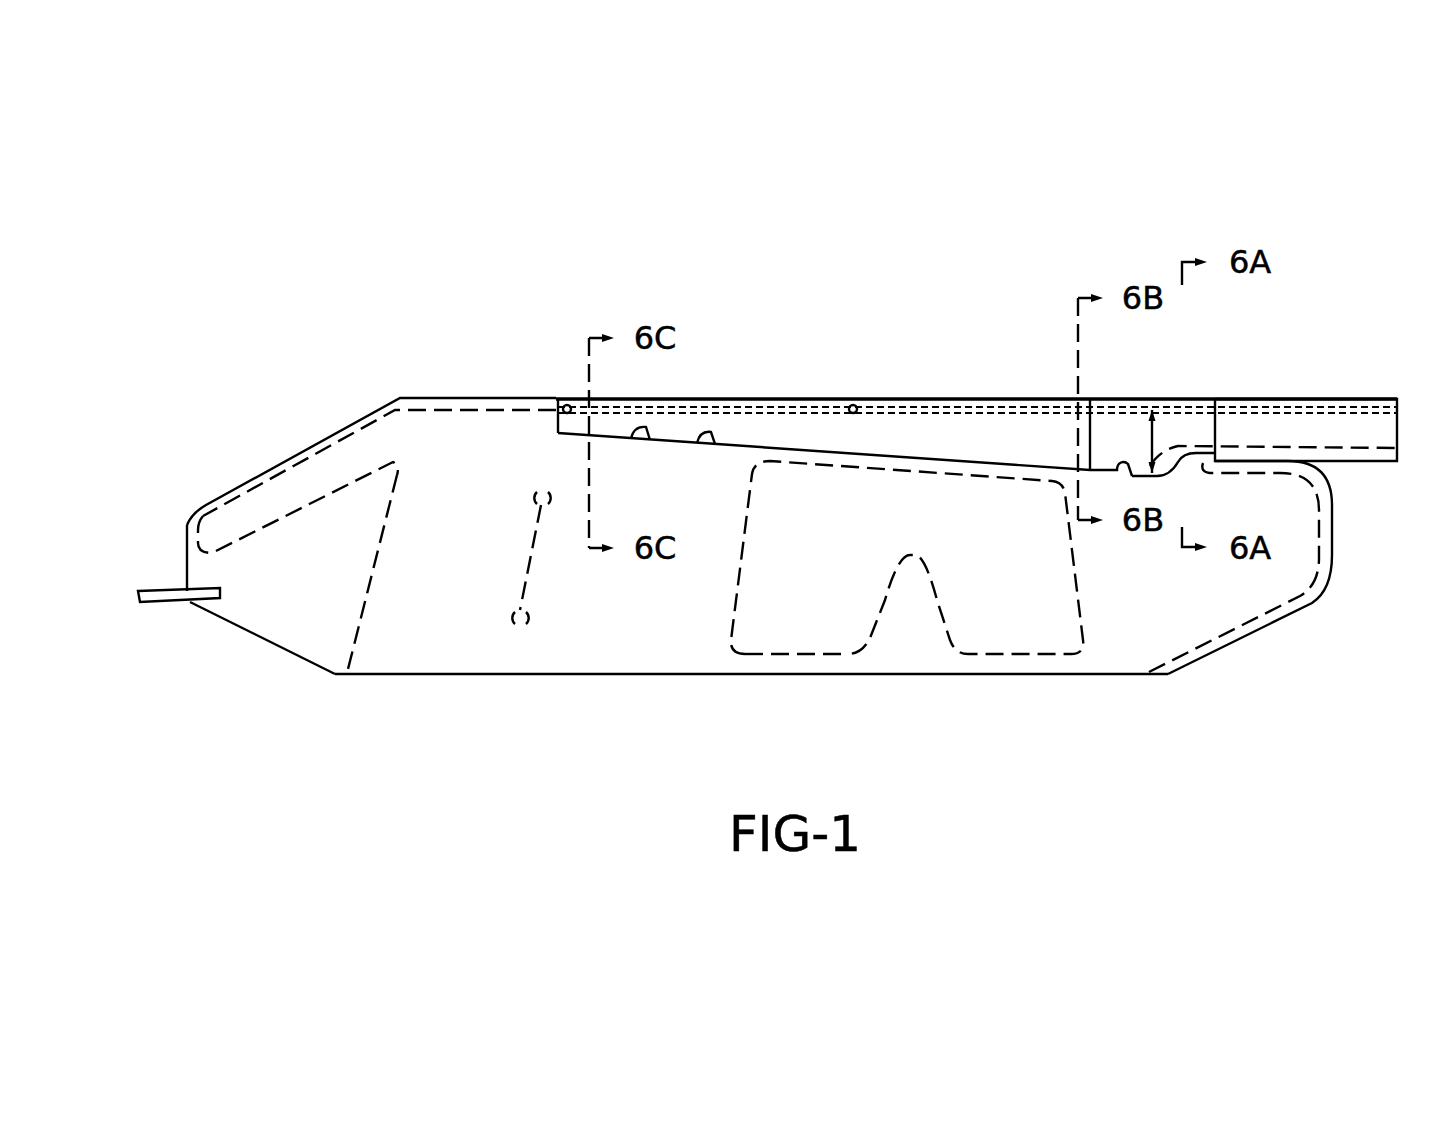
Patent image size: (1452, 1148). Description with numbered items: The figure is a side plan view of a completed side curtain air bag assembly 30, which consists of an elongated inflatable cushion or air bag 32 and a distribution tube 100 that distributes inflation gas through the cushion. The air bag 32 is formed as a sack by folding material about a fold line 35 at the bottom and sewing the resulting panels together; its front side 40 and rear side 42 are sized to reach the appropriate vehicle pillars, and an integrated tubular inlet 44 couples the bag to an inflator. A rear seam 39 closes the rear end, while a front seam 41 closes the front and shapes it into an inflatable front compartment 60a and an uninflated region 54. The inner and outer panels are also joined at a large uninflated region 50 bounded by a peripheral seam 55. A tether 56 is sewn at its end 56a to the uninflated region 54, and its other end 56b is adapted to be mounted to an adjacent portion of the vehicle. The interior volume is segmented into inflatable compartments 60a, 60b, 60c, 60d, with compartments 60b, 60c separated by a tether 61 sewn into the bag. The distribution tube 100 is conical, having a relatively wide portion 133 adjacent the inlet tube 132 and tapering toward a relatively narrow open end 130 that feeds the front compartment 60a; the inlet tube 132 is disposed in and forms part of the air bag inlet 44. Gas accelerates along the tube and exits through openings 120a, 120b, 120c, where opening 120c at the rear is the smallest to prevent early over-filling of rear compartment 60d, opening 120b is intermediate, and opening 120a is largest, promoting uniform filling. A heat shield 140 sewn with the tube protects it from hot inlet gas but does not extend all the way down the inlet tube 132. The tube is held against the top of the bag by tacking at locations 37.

The side curtain air bag assembly 30 is at (318, 250).
The air bag 32 is at (423, 390).
The fold line 35 is at (950, 676).
The tacking locations 37 is at (850, 405).
The rear seam 39 is at (1318, 553).
The front side 40 is at (246, 470).
The front seam 41 is at (368, 595).
The rear side 42 is at (1326, 595).
The inlet 44 is at (1354, 401).
The uninflated region 50 is at (897, 536).
The uninflated region 54 is at (280, 584).
The peripheral seam 55 is at (785, 653).
The tether 56 is at (176, 599).
The tether end 56a is at (196, 603).
The tether end 56b is at (185, 590).
The inflatable front compartment 60a is at (335, 470).
The inflatable compartment 60b is at (449, 590).
The inflatable compartment 60c is at (629, 621).
The rear inflatable compartment 60d is at (1145, 610).
The tether 61 is at (528, 570).
The distribution tube 100 is at (915, 420).
The opening 120a is at (640, 434).
The opening 120b is at (707, 438).
The opening 120c is at (1122, 468).
The open end 130 is at (552, 415).
The inlet tube 132 is at (1382, 432).
The wide portion 133 is at (1153, 443).
The heat shield 140 is at (1118, 435).